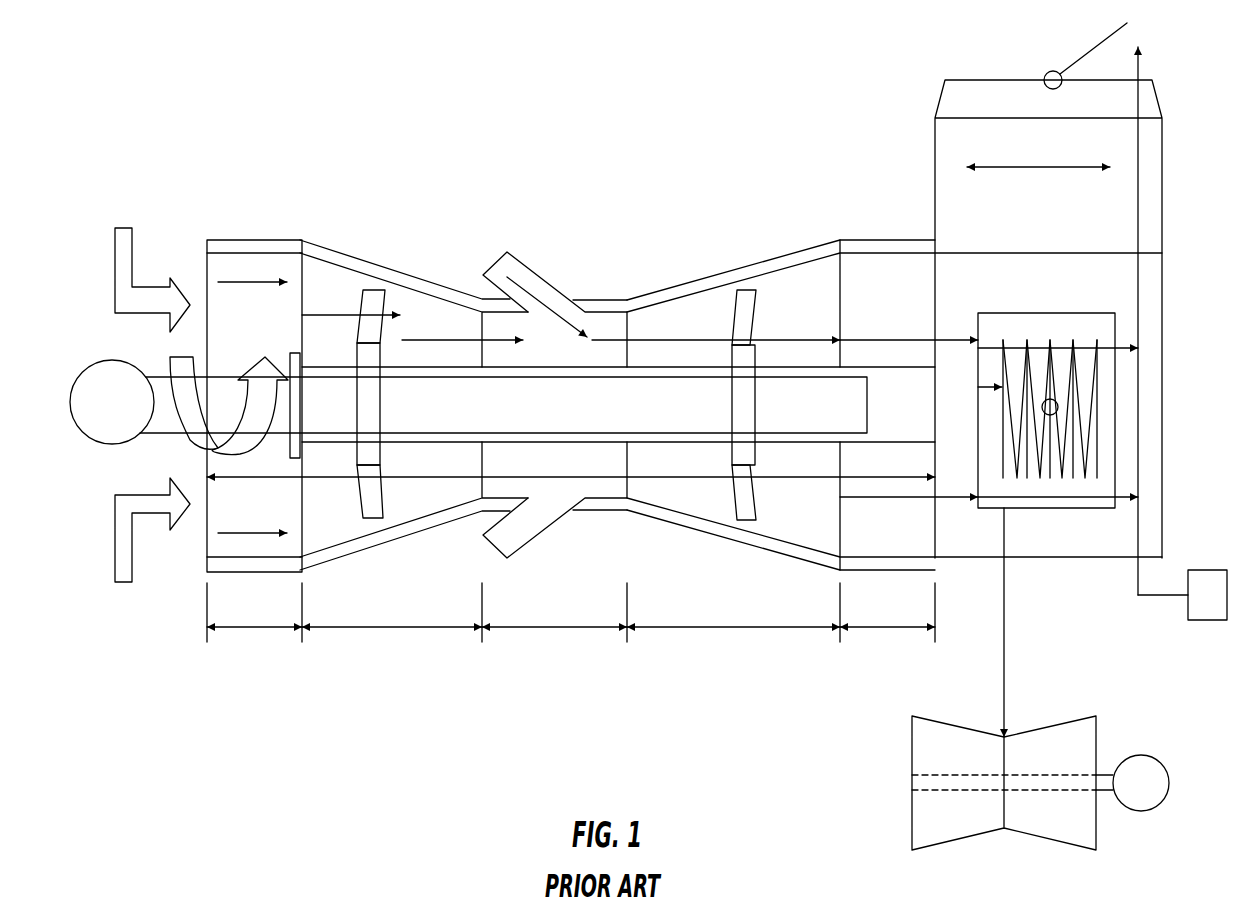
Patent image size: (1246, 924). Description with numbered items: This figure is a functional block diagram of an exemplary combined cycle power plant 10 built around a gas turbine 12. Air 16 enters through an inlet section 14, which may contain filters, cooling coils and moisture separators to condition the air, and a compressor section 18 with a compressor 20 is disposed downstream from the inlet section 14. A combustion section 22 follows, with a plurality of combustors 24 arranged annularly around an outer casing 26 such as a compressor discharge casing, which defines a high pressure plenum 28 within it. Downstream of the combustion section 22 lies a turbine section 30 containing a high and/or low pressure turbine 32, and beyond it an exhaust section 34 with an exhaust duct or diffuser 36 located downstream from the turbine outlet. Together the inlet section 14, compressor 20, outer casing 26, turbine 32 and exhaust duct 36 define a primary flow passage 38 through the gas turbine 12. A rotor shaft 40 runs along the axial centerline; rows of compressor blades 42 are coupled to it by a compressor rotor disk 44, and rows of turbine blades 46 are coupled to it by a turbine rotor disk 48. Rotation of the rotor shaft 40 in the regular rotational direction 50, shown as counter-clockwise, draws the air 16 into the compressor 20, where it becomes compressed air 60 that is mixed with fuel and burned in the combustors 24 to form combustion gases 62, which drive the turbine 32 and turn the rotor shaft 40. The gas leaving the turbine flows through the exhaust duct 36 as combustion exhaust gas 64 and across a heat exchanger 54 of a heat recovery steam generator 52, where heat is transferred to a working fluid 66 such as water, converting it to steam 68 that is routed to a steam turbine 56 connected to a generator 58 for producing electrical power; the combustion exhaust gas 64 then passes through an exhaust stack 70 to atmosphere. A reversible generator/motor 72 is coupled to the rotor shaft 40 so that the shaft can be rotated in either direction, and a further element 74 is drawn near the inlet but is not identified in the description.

The combined cycle power plant 10 is at (730, 196).
The gas turbine 12 is at (537, 697).
The inlet section 14 is at (248, 628).
The air 16 is at (120, 250).
The compressor section 18 is at (383, 628).
The compressor 20 is at (387, 547).
The combustion section 22 is at (552, 628).
The combustors 24 is at (529, 252).
The outer casing 26 is at (493, 303).
The high pressure plenum 28 is at (568, 365).
The turbine section 30 is at (718, 628).
The turbine 32 is at (742, 550).
The exhaust section 34 is at (865, 628).
The exhaust duct 36 is at (892, 576).
The primary flow passage 38 is at (250, 478).
The rotor shaft 40 is at (564, 379).
The compressor blades 42 is at (367, 298).
The compressor rotor disk 44 is at (368, 398).
The turbine blades 46 is at (745, 297).
The turbine rotor disk 48 is at (742, 403).
The regular rotational direction 50 is at (192, 415).
The heat recovery steam generator 52 is at (1128, 402).
The heat exchanger 54 is at (977, 389).
The steam turbine 56 is at (995, 838).
The generator 58 is at (1153, 797).
The compressed air 60 is at (468, 342).
The combustion gases 62 is at (545, 290).
The combustion exhaust gas 64 is at (1141, 63).
The working fluid 66 is at (1032, 363).
The steam 68 is at (1005, 625).
The exhaust stack 70 is at (1166, 145).
The generator/motor 72 is at (124, 416).
The inlet flow bar 74 is at (290, 350).